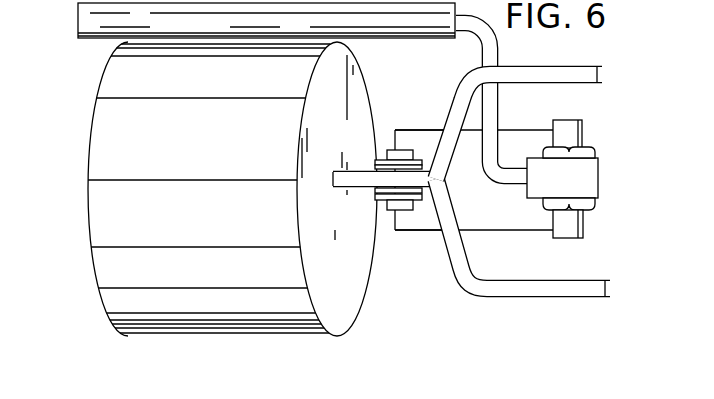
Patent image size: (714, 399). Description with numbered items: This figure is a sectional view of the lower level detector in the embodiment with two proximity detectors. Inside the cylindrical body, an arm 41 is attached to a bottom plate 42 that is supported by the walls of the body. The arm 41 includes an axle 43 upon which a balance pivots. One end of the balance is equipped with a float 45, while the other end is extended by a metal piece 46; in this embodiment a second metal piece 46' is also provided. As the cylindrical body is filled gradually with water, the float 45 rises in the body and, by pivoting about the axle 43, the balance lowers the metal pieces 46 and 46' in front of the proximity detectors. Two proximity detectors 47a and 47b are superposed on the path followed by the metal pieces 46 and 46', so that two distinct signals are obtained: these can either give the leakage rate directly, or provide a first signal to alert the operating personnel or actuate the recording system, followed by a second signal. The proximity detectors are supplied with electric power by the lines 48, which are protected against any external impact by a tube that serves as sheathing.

The arm 41 is at (422, 155).
The bottom plate 42 is at (541, 218).
The axle 43 is at (408, 211).
The float 45 is at (108, 268).
The metal piece 46 is at (477, 234).
The metal piece 46' is at (521, 104).
The proximity detector 47a is at (584, 222).
The proximity detector 47b is at (584, 132).
The lines 48 is at (78, 22).